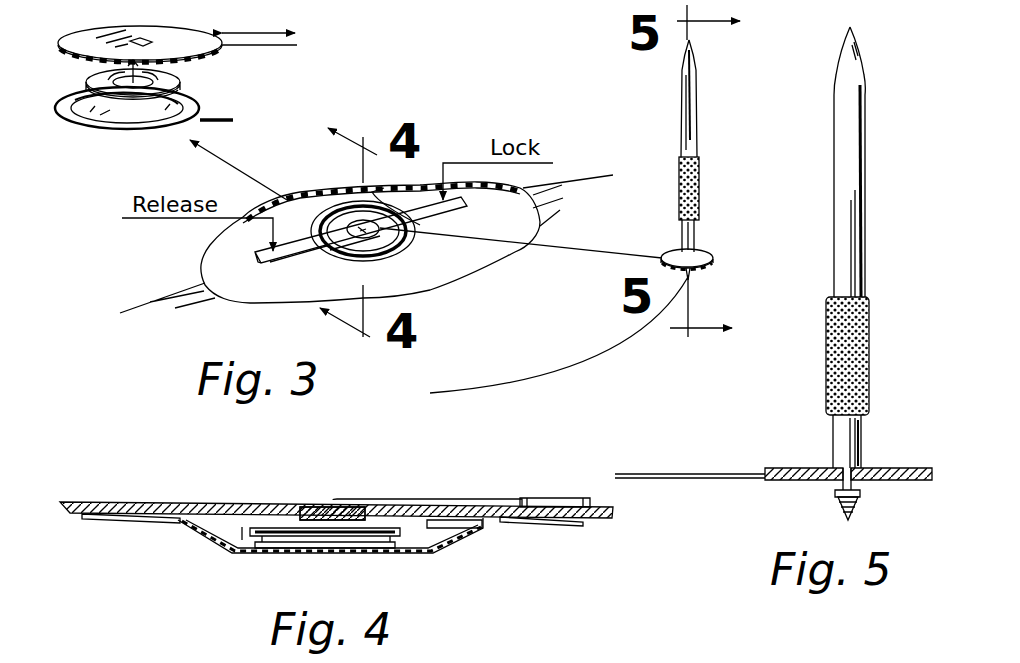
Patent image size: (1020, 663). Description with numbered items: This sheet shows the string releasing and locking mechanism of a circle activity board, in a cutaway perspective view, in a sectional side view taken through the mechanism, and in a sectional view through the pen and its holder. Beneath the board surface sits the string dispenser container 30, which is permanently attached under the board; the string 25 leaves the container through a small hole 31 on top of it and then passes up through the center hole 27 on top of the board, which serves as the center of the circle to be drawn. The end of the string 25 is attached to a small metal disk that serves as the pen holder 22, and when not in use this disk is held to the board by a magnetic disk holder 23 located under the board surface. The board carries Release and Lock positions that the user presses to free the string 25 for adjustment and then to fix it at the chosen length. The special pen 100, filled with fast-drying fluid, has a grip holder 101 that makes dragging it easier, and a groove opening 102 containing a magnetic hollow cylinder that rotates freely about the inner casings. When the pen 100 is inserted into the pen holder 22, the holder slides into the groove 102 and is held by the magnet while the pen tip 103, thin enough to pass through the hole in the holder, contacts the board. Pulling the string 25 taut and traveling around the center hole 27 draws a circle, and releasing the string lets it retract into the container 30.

In FIG. 3, the pen holder 22 is at (702, 250).
In FIG. 4, the pen holder 22 is at (530, 500).
In FIG. 5, the pen holder 22 is at (805, 467).
In FIG. 4, the magnetic disk holder 23 is at (297, 473).
In FIG. 3, the string 25 is at (267, 47).
In FIG. 4, the string 25 is at (467, 470).
In FIG. 5, the string 25 is at (720, 445).
In FIG. 4, the center hole 27 is at (332, 528).
In FIG. 3, the string dispenser container 30 is at (192, 82).
In FIG. 4, the string dispenser container 30 is at (350, 553).
In FIG. 3, the small hole 31 is at (101, 103).
In FIG. 3, the pen 100 is at (698, 105).
In FIG. 5, the pen 100 is at (872, 196).
In FIG. 5, the grip holder 101 is at (828, 367).
In FIG. 5, the groove opening 102 is at (862, 466).
In FIG. 5, the pen tip 103 is at (857, 503).